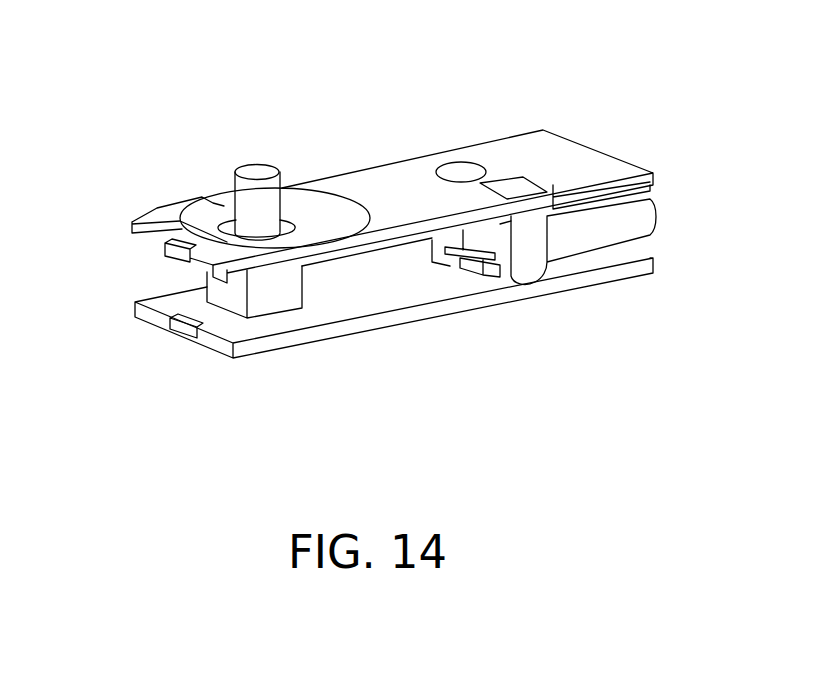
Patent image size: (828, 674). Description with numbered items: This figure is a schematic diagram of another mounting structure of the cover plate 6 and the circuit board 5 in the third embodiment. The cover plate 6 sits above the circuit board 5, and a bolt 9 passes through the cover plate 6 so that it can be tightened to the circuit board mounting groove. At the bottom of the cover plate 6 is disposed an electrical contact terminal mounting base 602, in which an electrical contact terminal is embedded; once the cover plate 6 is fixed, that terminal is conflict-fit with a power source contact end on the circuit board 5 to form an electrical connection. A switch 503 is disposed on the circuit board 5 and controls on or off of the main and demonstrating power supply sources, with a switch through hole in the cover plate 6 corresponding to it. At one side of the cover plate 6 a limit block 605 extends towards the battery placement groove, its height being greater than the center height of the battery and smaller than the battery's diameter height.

The circuit board 5 is at (378, 297).
The cover plate 6 is at (362, 182).
The bolt 9 is at (458, 175).
The switch 503 is at (263, 290).
The electrical contact terminal mounting base 602 is at (511, 252).
The limit block 605 is at (178, 203).